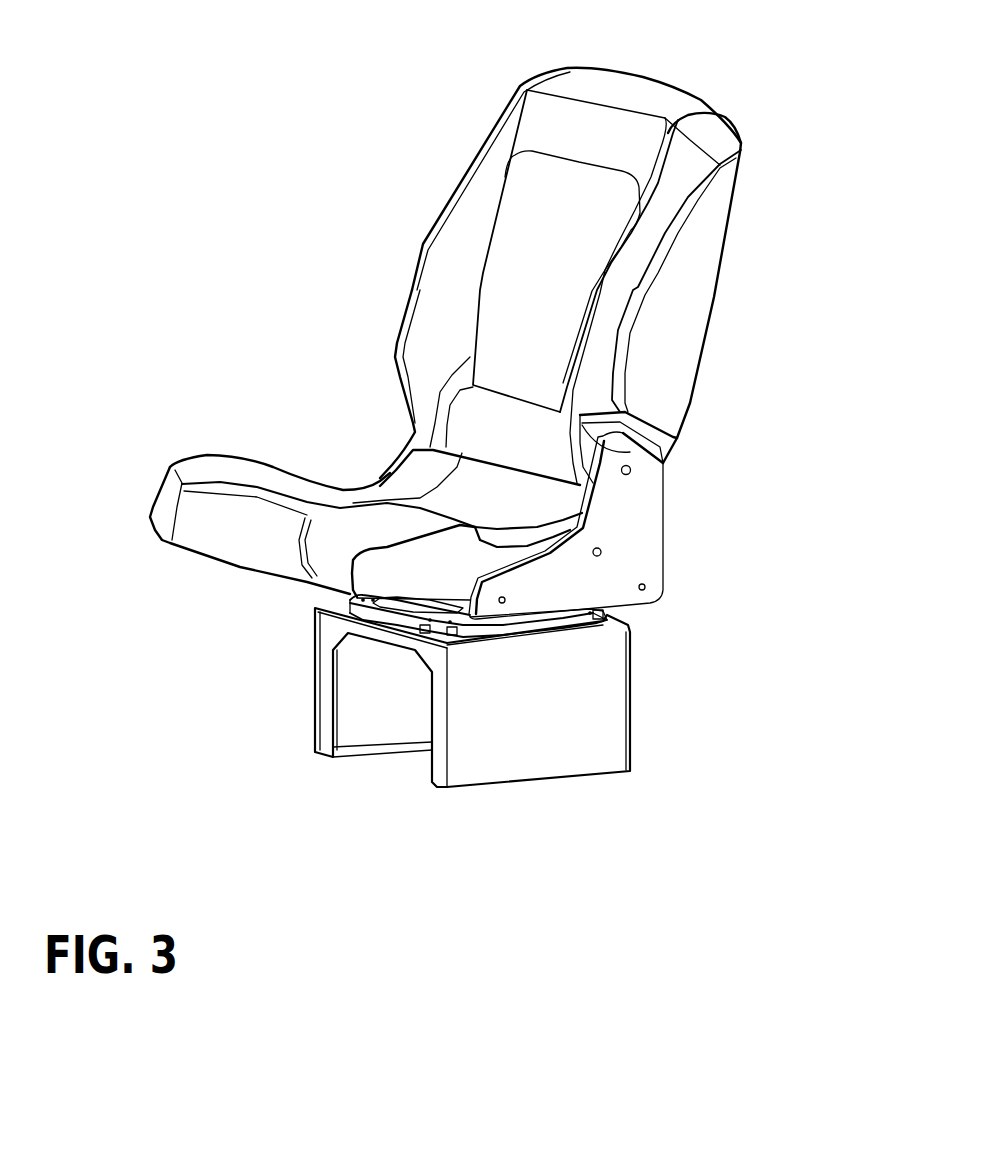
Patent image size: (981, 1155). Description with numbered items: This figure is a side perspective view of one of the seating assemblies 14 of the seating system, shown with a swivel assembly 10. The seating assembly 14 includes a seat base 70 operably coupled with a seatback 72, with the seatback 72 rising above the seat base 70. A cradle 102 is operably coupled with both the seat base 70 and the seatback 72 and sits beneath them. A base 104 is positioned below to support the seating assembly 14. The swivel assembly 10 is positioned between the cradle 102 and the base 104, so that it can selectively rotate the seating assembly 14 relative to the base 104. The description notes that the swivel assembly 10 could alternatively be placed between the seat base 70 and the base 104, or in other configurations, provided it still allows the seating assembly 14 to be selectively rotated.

The seating assembly 14 is at (438, 97).
The seatback 72 is at (653, 100).
The seat base 70 is at (195, 537).
The cradle 102 is at (622, 597).
The swivel assembly 10 is at (552, 629).
The base 104 is at (337, 627).